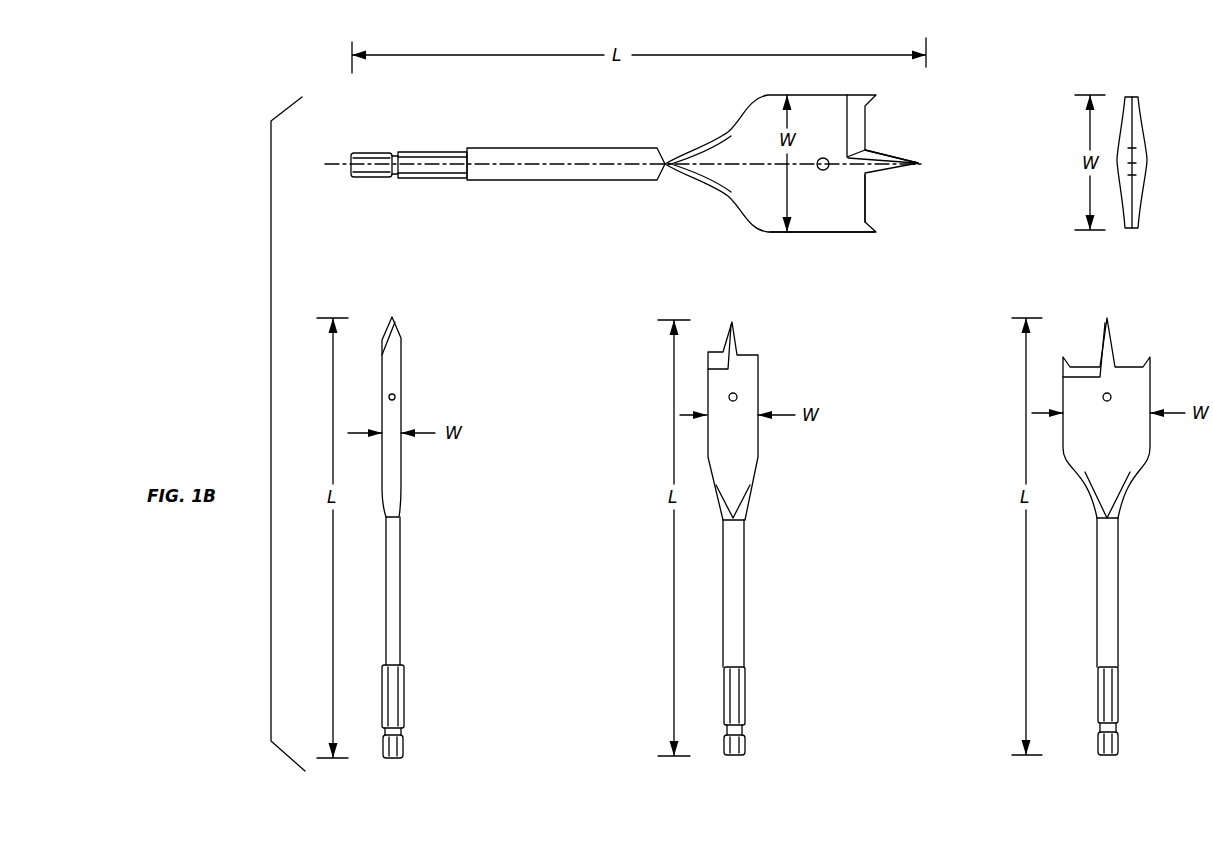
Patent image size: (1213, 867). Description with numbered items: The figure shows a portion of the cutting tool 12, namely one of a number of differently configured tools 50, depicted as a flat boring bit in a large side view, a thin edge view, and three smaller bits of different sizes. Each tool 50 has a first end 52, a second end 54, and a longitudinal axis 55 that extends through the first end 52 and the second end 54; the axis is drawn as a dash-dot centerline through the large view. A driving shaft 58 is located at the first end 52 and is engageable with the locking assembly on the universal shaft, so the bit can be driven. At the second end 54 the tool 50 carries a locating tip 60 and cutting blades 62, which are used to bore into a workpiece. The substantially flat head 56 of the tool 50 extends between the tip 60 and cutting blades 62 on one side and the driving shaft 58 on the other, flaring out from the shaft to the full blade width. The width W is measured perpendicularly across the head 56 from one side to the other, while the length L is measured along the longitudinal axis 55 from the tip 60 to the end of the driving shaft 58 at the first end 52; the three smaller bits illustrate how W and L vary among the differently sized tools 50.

The cutting tool 12 is at (770, 290).
The tool 50 is at (812, 112).
The first end 52 is at (363, 177).
The second end 54 is at (867, 183).
The longitudinal axis 55 is at (583, 166).
The head 56 is at (826, 208).
The driving shaft 58 is at (527, 153).
The locating tip 60 is at (925, 158).
The cutting blades 62 is at (875, 148).